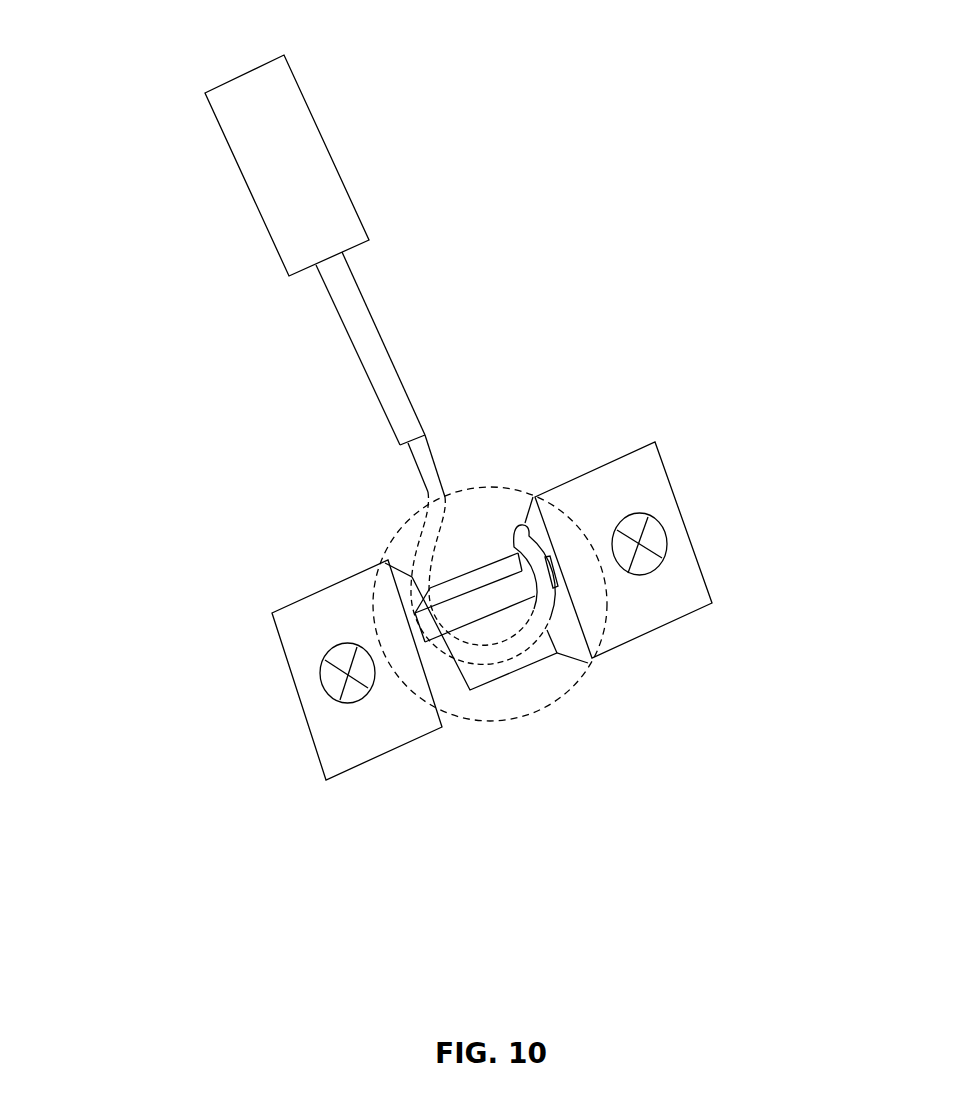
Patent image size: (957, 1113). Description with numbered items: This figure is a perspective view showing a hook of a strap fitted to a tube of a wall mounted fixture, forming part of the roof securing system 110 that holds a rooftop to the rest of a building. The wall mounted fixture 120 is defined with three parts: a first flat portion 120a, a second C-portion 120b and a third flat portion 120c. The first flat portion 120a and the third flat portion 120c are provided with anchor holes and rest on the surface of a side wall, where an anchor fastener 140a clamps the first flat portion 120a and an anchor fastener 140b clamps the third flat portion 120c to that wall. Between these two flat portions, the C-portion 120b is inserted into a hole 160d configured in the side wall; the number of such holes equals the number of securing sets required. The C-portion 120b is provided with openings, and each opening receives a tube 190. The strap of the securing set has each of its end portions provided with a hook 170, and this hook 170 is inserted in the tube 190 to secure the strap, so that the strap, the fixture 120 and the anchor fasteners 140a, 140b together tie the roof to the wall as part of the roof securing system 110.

The roof securing system 110 is at (160, 42).
The wall mounted fixture 120 is at (633, 400).
The first flat portion 120a is at (310, 633).
The second C-portion 120b is at (492, 682).
The third flat portion 120c is at (683, 622).
The anchor fastener 140a is at (337, 687).
The anchor fastener 140b is at (668, 546).
The hole 160d is at (498, 487).
The hook 170 is at (418, 468).
The tube 190 is at (515, 603).